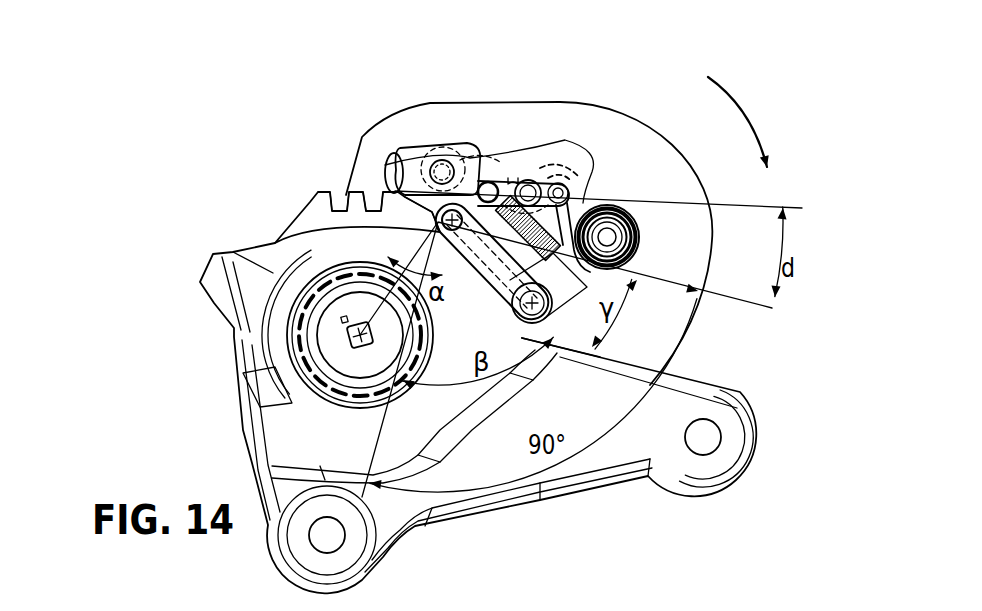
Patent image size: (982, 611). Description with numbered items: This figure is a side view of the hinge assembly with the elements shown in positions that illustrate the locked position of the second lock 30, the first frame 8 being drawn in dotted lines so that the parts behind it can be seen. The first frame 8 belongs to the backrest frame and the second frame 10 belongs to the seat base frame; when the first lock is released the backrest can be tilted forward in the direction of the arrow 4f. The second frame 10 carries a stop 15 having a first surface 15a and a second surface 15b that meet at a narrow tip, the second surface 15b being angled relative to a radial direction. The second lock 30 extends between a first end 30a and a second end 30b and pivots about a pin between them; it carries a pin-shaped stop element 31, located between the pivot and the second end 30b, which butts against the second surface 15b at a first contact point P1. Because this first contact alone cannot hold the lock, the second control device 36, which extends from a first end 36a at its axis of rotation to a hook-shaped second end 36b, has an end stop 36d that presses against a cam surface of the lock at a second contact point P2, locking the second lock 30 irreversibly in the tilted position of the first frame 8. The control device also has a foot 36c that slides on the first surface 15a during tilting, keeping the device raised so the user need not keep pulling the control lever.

The first frame 8 is at (637, 186).
The second frame 10 is at (592, 462).
The stop 15 is at (360, 232).
The first surface 15a is at (337, 193).
The second surface 15b is at (423, 218).
The second lock 30 is at (642, 250).
The first end 30a is at (586, 347).
The second end 30b is at (513, 177).
The stop element 31 is at (442, 211).
The second control device 36 is at (502, 173).
The first end 36a is at (408, 157).
The second end 36b is at (573, 173).
The foot 36c is at (443, 170).
The end stop 36d is at (534, 187).
The arrow 4f is at (737, 100).
The first contact point P1 is at (410, 232).
The second contact point P2 is at (527, 175).